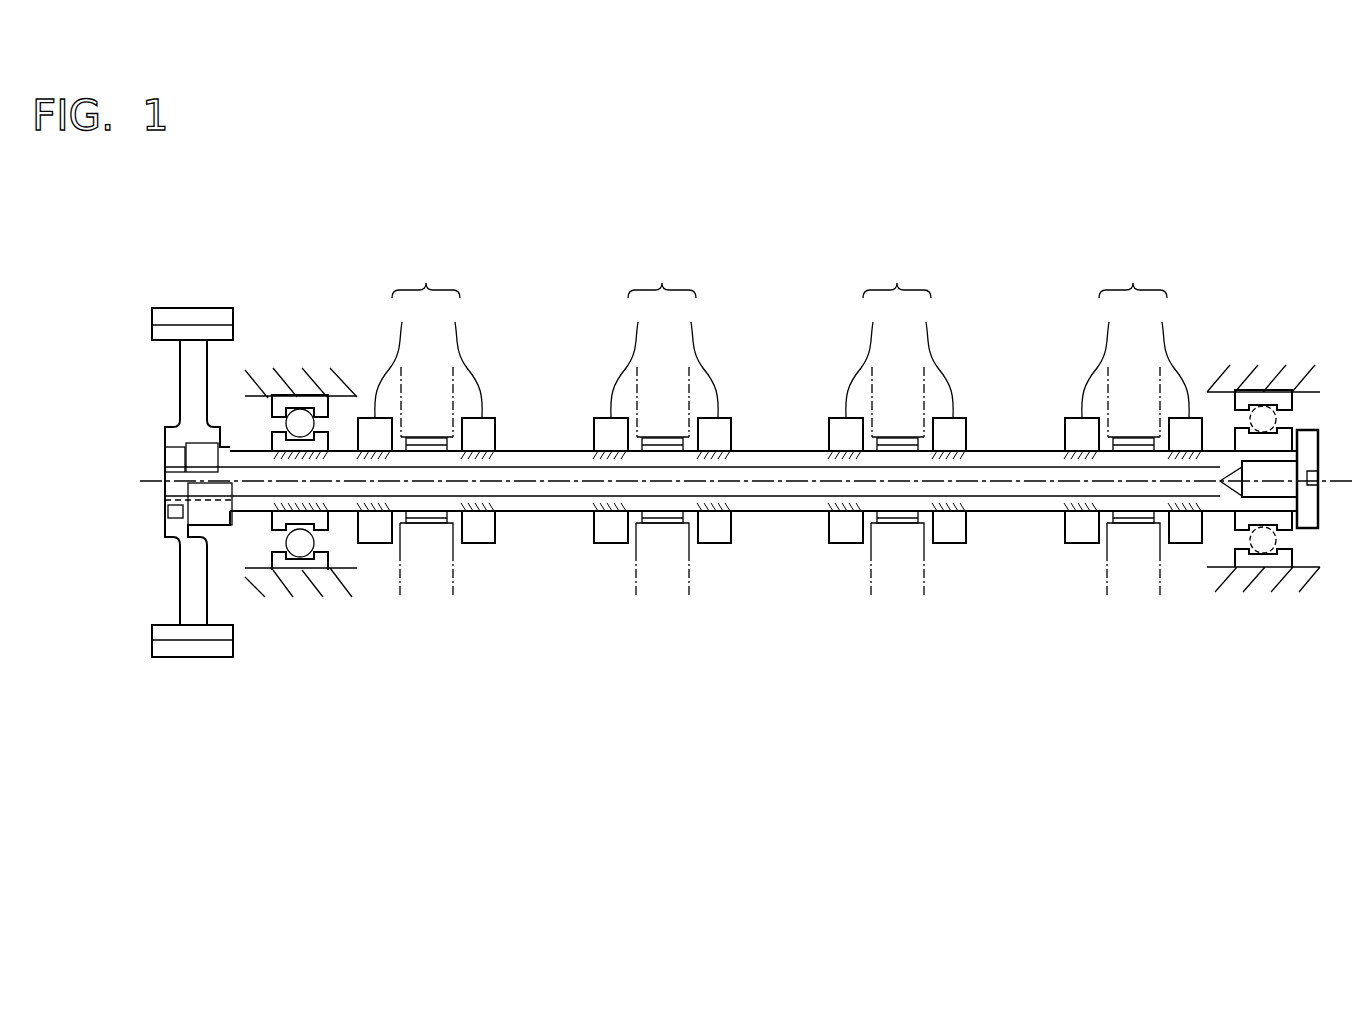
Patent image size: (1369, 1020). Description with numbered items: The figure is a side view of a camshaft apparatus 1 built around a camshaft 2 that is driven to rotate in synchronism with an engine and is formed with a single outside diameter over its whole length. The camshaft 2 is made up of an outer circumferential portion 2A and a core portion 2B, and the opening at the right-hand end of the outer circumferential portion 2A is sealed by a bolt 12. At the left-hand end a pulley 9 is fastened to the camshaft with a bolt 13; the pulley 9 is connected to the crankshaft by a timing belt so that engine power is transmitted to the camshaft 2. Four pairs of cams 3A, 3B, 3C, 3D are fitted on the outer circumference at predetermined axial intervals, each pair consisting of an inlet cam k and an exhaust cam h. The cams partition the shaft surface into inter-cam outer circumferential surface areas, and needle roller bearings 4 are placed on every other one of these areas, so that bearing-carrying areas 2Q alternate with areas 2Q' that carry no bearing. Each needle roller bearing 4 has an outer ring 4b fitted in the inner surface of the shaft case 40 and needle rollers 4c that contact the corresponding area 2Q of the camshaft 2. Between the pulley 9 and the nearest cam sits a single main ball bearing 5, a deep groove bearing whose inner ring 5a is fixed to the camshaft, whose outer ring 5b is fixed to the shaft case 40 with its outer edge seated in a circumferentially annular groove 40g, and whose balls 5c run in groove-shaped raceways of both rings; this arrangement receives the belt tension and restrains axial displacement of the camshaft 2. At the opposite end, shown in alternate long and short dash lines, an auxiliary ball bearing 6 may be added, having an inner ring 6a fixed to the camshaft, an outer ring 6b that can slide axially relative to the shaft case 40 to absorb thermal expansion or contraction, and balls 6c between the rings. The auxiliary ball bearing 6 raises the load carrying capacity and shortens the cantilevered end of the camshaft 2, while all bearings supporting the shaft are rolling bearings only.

The camshaft apparatus 1 is at (1000, 256).
The camshaft 2 is at (775, 520).
The outer circumferential portion 2A is at (763, 451).
The core portion 2B is at (553, 496).
The inter-cam outer circumferential surface area 2Q is at (437, 389).
The inter-cam outer circumferential surface area 2Q' is at (550, 410).
The pair of cams 3A is at (428, 336).
The pair of cams 3B is at (664, 336).
The pair of cams 3C is at (899, 336).
The pair of cams 3D is at (1135, 336).
The inlet cam k is at (756, 310).
The exhaust cam h is at (808, 310).
The needle roller bearing 4 is at (422, 545).
The outer ring 4b is at (434, 524).
The needle rollers 4c is at (421, 437).
The main ball bearing 5 is at (258, 547).
The inner ring 5a is at (320, 527).
The outer ring 5b is at (307, 563).
The balls 5c is at (295, 415).
The auxiliary ball bearing 6 is at (1308, 410).
The inner ring 6a is at (1293, 530).
The outer ring 6b is at (1290, 548).
The bearing housing 6c is at (1260, 417).
The pulley 9 is at (190, 308).
The bolt 12 is at (1308, 457).
The bolt 13 is at (172, 498).
The shaft case 40 is at (455, 558).
The circumferentially annular groove 40g is at (282, 570).